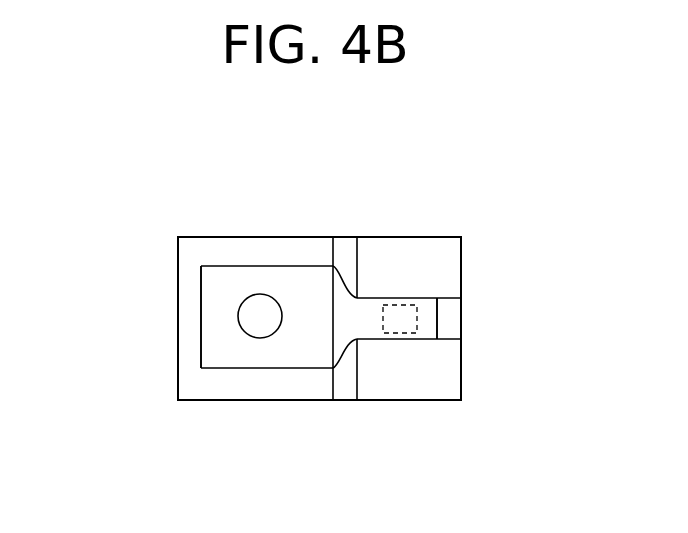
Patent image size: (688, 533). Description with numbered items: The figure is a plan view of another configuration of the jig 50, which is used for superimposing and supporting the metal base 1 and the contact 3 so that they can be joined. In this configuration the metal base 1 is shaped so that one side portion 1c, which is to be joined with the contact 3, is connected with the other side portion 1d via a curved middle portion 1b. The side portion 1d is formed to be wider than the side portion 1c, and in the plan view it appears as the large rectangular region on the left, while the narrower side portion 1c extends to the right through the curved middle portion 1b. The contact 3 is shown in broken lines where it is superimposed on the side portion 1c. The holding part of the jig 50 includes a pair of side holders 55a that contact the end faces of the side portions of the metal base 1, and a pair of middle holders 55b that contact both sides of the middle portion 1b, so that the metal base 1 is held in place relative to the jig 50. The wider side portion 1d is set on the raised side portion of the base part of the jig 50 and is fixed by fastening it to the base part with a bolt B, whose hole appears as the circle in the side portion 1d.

The metal base 1 is at (248, 264).
The middle portion 1b is at (348, 332).
The side portion 1c is at (427, 325).
The side portion 1d is at (215, 363).
The contact 3 is at (412, 304).
The jig 50 is at (477, 375).
The side holders 55a is at (191, 338).
The middle holders 55b is at (418, 268).
The bolt B is at (251, 338).